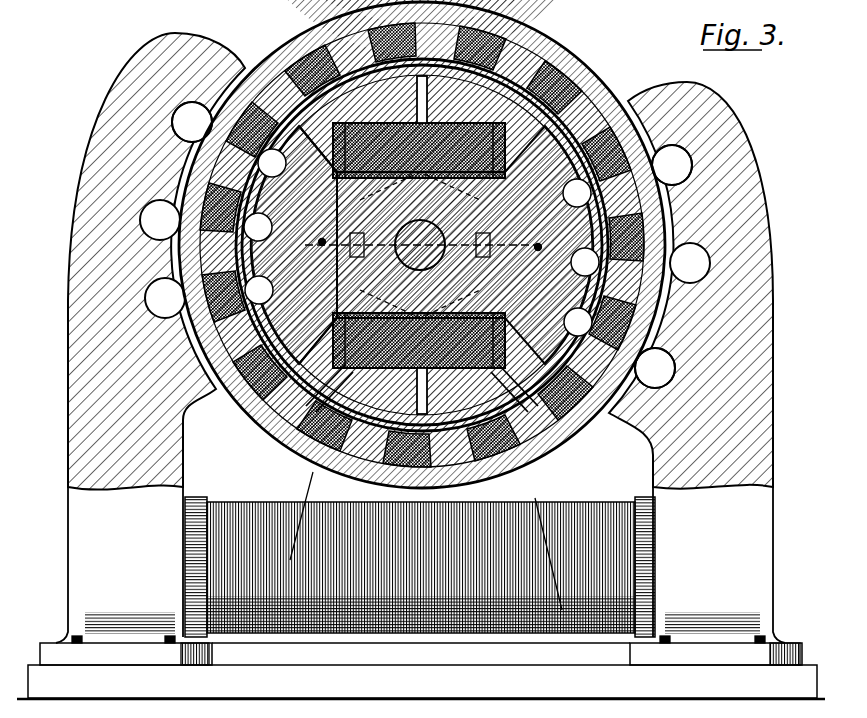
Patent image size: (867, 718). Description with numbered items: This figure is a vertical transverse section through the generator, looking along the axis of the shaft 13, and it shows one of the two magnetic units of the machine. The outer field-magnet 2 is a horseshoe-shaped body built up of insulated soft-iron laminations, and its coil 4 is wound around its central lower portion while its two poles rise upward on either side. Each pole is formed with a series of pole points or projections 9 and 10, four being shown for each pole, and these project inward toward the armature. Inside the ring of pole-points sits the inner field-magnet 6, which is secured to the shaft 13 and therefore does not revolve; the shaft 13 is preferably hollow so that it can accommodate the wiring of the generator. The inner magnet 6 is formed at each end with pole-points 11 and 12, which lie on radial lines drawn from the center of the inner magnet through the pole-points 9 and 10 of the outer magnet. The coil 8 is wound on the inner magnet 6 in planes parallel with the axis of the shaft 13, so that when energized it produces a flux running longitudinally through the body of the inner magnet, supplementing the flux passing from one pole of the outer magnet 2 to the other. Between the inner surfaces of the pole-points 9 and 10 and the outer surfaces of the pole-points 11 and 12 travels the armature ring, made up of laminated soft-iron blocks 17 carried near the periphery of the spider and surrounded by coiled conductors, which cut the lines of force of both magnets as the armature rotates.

The outer field-magnet 2 is at (72, 300).
The coil 4 is at (249, 515).
The inner field-magnet 6 is at (318, 137).
The coil 8 is at (478, 135).
The pole-point 9 is at (184, 152).
The pole-point 10 is at (672, 194).
The pole-point 11 is at (300, 194).
The pole-point 12 is at (421, 245).
The shaft 13 is at (420, 245).
The block 17 is at (594, 100).